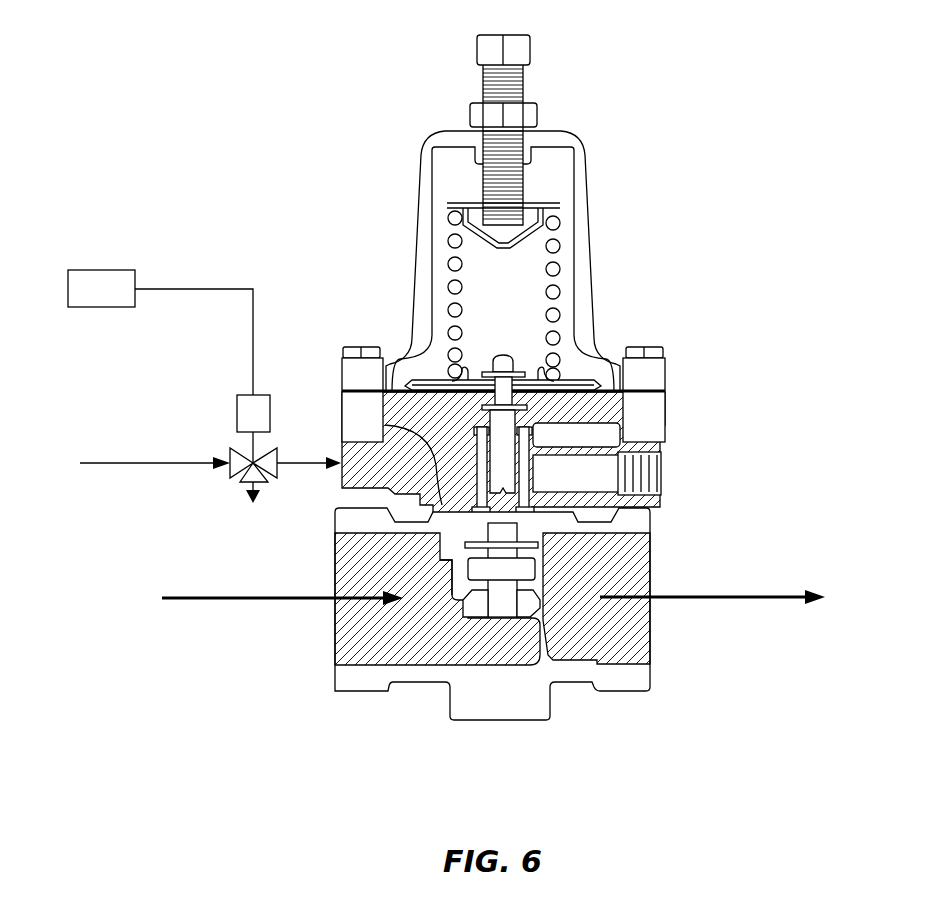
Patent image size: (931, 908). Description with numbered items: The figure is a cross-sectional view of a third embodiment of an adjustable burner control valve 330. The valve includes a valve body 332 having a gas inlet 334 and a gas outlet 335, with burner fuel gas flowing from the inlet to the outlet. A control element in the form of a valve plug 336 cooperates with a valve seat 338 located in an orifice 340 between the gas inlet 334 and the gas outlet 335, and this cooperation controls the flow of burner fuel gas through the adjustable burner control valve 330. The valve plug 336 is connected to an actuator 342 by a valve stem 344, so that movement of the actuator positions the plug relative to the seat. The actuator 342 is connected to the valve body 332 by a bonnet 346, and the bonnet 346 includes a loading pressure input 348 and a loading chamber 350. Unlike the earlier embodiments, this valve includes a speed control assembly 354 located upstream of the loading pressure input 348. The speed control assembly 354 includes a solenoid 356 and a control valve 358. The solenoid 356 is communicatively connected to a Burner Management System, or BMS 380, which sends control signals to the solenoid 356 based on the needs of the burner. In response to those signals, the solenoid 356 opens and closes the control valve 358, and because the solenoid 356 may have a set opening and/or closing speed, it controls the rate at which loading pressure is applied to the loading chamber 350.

The adjustable burner control valve 330 is at (303, 157).
The valve body 332 is at (390, 688).
The gas inlet 334 is at (340, 640).
The gas outlet 335 is at (625, 658).
The valve plug 336 is at (533, 567).
The valve seat 338 is at (537, 605).
The orifice 340 is at (502, 607).
The actuator 342 is at (581, 137).
The valve stem 344 is at (507, 445).
The bonnet 346 is at (668, 425).
The loading pressure input 348 is at (363, 450).
The loading chamber 350 is at (606, 388).
The speed control assembly 354 is at (192, 412).
The solenoid 356 is at (243, 395).
The control valve 358 is at (240, 478).
The Burner Management System (BMS) 380 is at (104, 269).